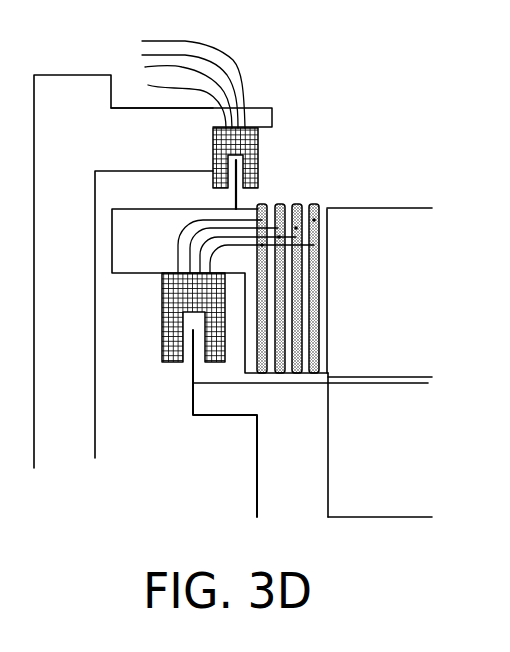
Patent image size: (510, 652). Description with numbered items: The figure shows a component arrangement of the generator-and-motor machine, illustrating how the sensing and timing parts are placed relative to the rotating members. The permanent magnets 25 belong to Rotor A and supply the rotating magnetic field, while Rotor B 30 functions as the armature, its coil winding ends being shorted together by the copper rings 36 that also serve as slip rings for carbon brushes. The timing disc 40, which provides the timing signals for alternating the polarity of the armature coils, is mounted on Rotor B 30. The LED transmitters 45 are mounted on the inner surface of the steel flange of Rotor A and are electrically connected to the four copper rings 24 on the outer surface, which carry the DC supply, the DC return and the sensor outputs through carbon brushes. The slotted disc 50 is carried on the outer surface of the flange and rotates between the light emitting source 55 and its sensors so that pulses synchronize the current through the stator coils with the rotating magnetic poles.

The light emitting source 55 is at (262, 158).
The disc 2 50 is at (236, 200).
The copper rings 24 is at (314, 204).
The permanent magnets 25 is at (406, 295).
The LED transmitters 45 is at (162, 312).
The disc 1 40 is at (193, 388).
The copper rings 36 is at (303, 468).
The Rotor B 30 is at (395, 460).